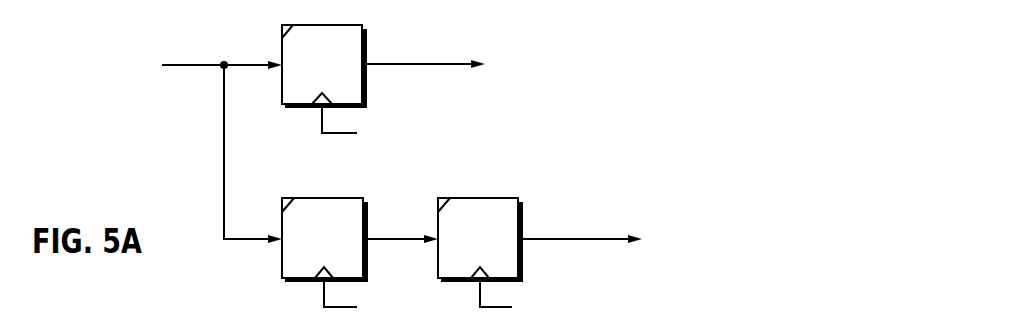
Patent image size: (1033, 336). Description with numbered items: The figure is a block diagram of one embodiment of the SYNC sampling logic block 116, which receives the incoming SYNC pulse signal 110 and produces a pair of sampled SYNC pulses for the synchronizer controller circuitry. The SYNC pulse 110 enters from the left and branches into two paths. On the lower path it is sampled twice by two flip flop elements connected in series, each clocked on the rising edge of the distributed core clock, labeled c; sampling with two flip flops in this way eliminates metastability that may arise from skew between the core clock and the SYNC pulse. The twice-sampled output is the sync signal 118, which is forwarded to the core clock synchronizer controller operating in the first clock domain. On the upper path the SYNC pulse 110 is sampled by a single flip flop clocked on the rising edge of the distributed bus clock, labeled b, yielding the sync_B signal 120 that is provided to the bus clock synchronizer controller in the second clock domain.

The SYNC pulse signal 110 is at (143, 108).
The SYNC sampling logic block 116 is at (665, 55).
The sync signal 118 is at (742, 253).
The sync_B signal 120 is at (622, 78).